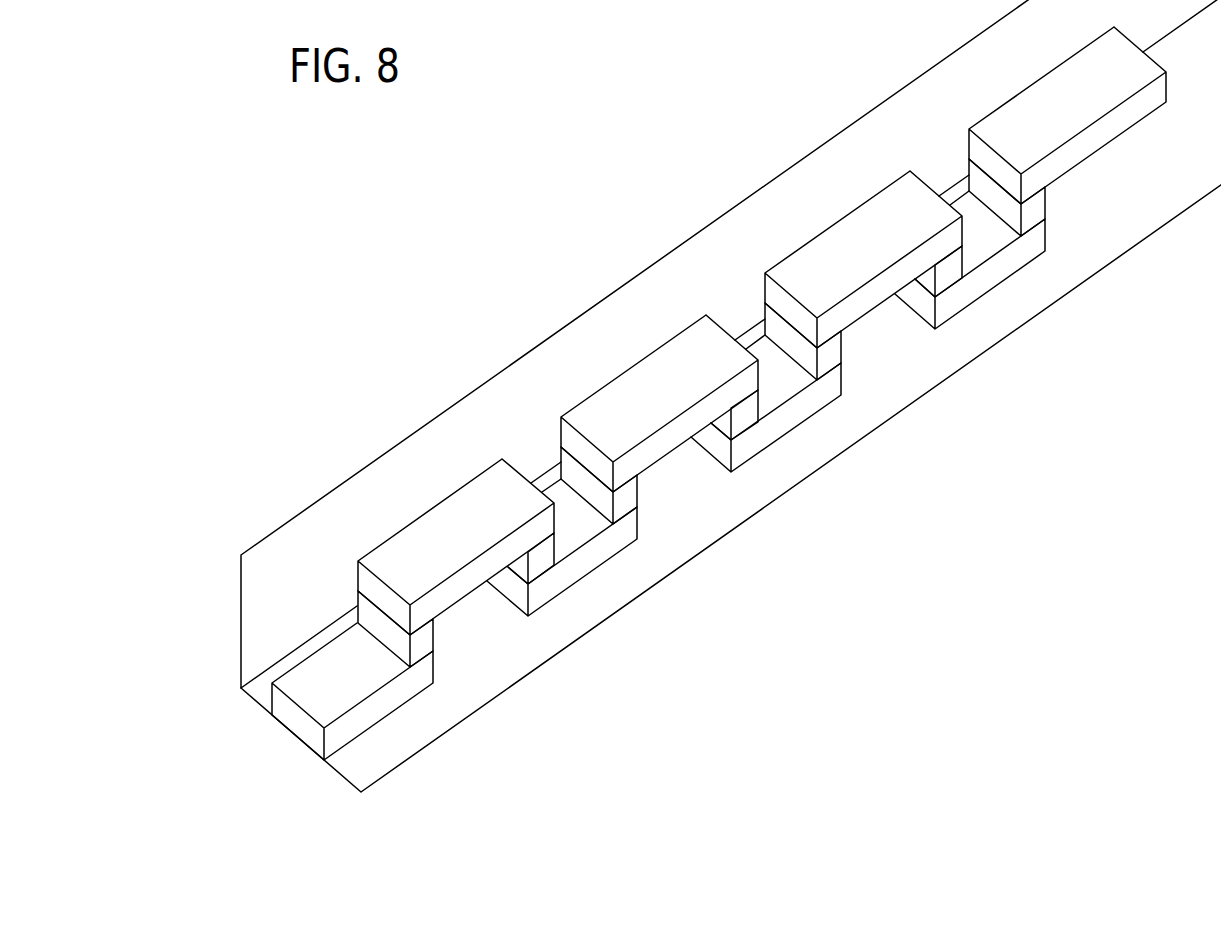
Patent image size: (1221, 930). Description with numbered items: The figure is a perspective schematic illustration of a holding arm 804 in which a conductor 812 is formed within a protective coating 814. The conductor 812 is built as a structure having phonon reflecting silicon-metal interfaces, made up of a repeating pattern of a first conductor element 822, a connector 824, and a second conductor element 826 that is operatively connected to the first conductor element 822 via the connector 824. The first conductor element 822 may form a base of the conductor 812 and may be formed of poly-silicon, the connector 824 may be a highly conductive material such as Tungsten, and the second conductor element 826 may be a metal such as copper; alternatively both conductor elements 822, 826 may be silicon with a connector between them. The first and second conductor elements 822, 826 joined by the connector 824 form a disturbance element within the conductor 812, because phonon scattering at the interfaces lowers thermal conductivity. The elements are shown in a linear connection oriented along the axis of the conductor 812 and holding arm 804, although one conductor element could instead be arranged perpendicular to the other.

The holding arm 804 is at (451, 237).
The conductor 812 is at (828, 459).
The protective coating 814 is at (262, 601).
The first conductor element 822 is at (988, 279).
The connector 824 is at (1033, 212).
The second conductor element 826 is at (843, 239).